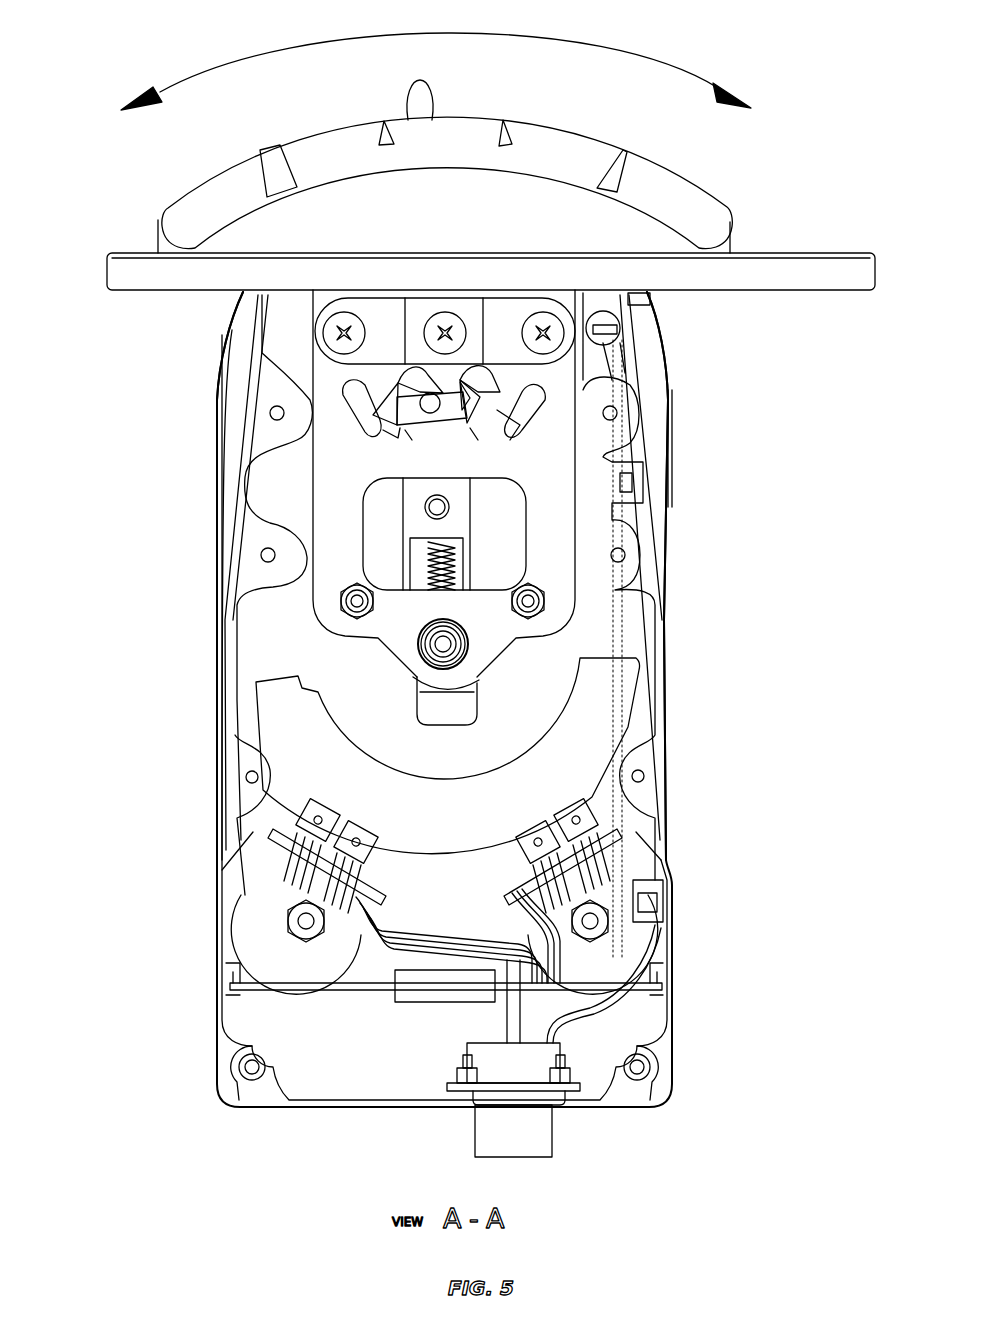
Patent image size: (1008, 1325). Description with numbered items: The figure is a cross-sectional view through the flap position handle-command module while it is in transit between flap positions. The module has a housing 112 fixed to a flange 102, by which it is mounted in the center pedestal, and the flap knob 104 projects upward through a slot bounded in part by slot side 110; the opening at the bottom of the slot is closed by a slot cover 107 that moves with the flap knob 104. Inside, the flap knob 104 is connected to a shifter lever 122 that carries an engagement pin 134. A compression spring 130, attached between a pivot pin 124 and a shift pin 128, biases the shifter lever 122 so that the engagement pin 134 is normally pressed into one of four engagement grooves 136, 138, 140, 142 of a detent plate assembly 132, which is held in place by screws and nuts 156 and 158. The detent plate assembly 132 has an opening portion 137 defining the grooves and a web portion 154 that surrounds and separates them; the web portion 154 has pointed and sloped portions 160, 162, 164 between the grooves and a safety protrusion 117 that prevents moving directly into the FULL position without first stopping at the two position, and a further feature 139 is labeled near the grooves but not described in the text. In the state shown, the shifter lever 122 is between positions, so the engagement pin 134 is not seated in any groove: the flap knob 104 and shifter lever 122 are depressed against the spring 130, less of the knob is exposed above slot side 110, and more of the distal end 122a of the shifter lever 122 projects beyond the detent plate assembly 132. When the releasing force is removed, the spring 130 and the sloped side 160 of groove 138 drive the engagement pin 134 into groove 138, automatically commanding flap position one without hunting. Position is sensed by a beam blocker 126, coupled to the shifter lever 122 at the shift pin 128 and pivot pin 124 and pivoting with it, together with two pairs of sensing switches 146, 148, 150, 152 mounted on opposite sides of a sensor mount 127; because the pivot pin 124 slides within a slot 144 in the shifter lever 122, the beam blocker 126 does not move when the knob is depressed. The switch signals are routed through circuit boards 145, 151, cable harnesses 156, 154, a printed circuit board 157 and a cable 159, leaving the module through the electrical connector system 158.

The flange 102 is at (876, 266).
The flap knob 104 is at (432, 86).
The slot cover 107 is at (217, 408).
The second flap knob slot side 110 is at (733, 234).
The housing 112 is at (672, 1034).
The safety protrusion 117 is at (483, 394).
The shifter lever 122 is at (470, 520).
The distal end of shifter lever 122a is at (480, 697).
The pivot pin 124 is at (447, 644).
The beam blocker 126 is at (330, 698).
The sensor mount 127 is at (627, 862).
The shift pin 128 is at (430, 508).
The compression spring 130 is at (456, 548).
The detent plate assembly 132 is at (570, 612).
The engagement pin 134 is at (431, 406).
The engagement groove 136 is at (358, 396).
The opening portion 137 is at (488, 452).
The engagement groove 138 is at (402, 378).
The latch stop 139 is at (424, 453).
The engagement groove 140 is at (479, 372).
The engagement groove 142 is at (525, 394).
The slot 144 is at (462, 570).
The circuit board 145 is at (508, 898).
The sensing switch 146 is at (568, 822).
The sensing switch 148 is at (528, 845).
The sensing switch 150 is at (355, 840).
The circuit board 151 is at (363, 902).
The sensing switch 152 is at (315, 815).
The web portion 154 is at (348, 516).
The screws and nuts 156 is at (354, 596).
The printed circuit board 157 is at (289, 988).
The electrical connector system 158 is at (541, 312).
The cable 159 is at (505, 1022).
The pointed and sloped portion 160 is at (410, 427).
The pointed and sloped portion 162 is at (487, 377).
The pointed and sloped portion 164 is at (497, 410).